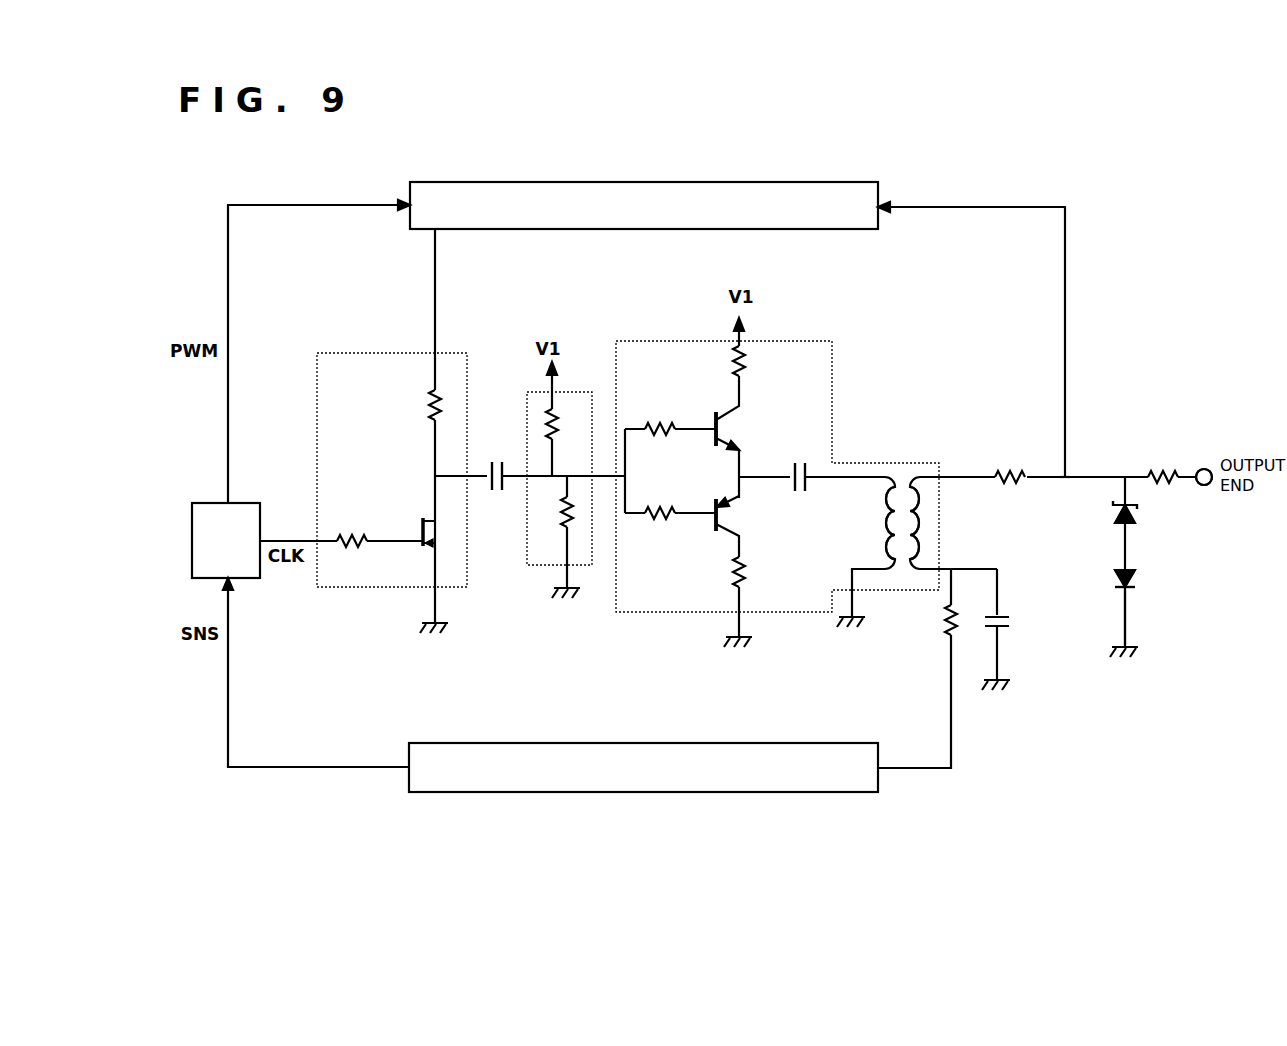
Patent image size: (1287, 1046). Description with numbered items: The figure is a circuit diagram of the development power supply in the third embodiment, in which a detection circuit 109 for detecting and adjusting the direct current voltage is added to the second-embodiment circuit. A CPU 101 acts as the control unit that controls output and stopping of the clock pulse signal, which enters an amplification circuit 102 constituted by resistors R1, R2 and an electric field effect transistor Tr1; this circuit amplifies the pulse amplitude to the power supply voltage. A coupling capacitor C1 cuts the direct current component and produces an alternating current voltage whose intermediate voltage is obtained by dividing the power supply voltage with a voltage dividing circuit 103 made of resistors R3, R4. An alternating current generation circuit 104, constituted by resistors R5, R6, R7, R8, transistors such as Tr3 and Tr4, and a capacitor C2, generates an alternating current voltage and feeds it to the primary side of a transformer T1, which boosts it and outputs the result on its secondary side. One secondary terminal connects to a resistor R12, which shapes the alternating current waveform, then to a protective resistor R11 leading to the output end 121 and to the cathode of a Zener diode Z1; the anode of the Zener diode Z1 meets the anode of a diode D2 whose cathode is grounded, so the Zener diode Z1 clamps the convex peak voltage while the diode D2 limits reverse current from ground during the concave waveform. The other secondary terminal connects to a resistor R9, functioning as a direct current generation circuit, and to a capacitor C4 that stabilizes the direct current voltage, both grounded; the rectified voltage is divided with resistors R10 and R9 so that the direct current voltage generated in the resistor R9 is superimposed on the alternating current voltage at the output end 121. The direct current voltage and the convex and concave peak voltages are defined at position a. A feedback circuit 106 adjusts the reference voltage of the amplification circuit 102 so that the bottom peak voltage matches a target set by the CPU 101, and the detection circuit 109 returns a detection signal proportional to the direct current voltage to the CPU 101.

The CPU 101 is at (200, 503).
The amplification circuit 102 is at (330, 353).
The voltage dividing circuit 103 is at (582, 392).
The alternating current generation circuit 104 is at (665, 341).
The feedback circuit 106 is at (530, 182).
The detection circuit 109 is at (530, 743).
The output end 121 is at (1200, 469).
The resistor R1 is at (352, 533).
The resistor R2 is at (430, 402).
The resistor R3 is at (560, 430).
The resistor R4 is at (564, 518).
The resistor R5 is at (662, 423).
The resistor R6 is at (662, 522).
The resistor R7 is at (746, 364).
The resistor R8 is at (746, 565).
The resistor R9 is at (946, 628).
The resistor R10 is at (1138, 630).
The resistor R11 is at (1158, 471).
The resistor R12 is at (1003, 471).
The capacitor C1 is at (499, 460).
The capacitor C2 is at (802, 462).
The capacitor C4 is at (1012, 615).
The electric field effect transistor Tr1 is at (419, 519).
The transistor Tr3 is at (734, 514).
The transistor Tr4 is at (730, 430).
The transformer T1 is at (878, 540).
The Zener diode Z1 is at (1136, 515).
The diode D2 is at (1136, 574).
The position a is at (1085, 476).